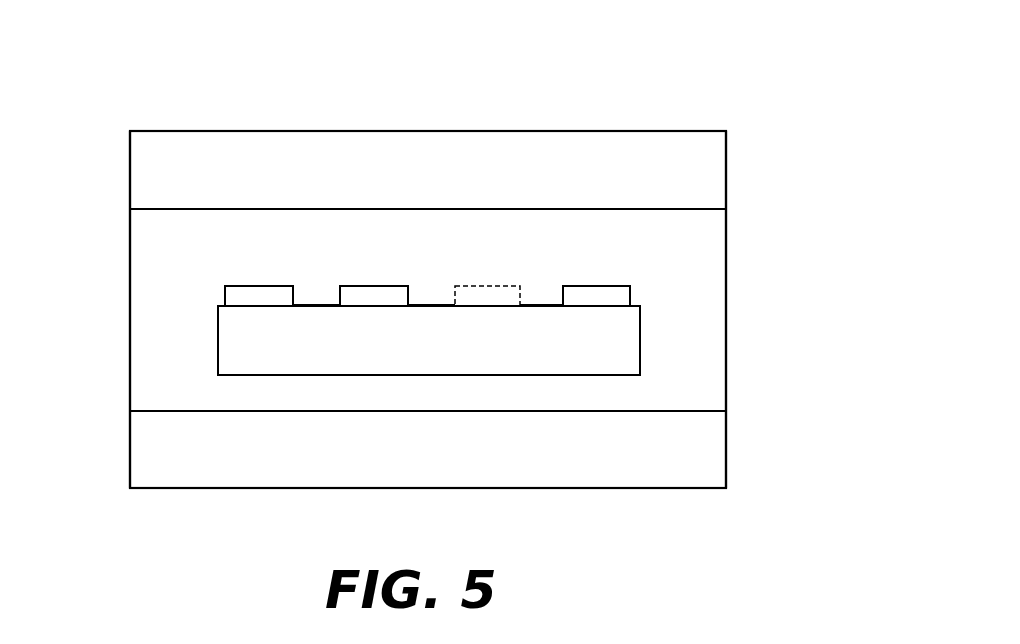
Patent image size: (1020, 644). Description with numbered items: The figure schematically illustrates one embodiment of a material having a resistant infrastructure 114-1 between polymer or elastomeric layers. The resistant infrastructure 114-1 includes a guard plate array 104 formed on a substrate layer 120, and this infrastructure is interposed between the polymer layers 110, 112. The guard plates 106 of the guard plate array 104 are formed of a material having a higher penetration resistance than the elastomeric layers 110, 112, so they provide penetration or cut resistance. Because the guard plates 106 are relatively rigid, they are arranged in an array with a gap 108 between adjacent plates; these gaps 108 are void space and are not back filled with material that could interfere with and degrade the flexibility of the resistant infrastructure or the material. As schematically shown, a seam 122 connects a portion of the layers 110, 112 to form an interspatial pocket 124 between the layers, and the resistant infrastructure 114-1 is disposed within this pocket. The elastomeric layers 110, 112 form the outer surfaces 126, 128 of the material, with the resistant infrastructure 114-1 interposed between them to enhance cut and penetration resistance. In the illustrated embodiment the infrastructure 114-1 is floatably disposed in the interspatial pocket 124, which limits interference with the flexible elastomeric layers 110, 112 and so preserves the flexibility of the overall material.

The guard plate array 104 is at (575, 262).
The guard plates 106 is at (253, 287).
The gap 108 is at (340, 297).
The polymer layer 110 is at (493, 165).
The polymer layer 112 is at (700, 460).
The resistant infrastructure 114-1 is at (653, 320).
The substrate layer 120 is at (460, 357).
The seam 122 is at (130, 323).
The interspatial pocket 124 is at (530, 254).
The outer surface 126 is at (232, 130).
The outer surface 128 is at (168, 497).